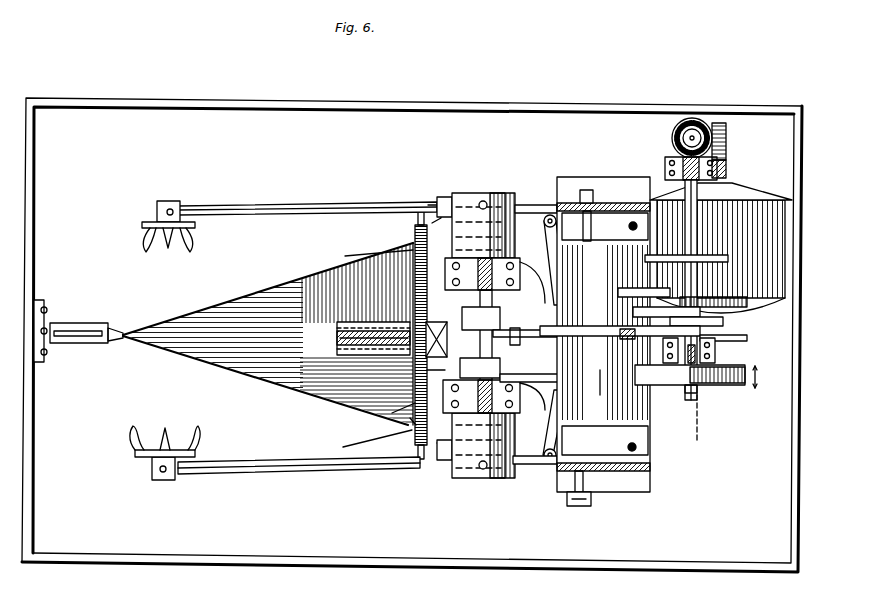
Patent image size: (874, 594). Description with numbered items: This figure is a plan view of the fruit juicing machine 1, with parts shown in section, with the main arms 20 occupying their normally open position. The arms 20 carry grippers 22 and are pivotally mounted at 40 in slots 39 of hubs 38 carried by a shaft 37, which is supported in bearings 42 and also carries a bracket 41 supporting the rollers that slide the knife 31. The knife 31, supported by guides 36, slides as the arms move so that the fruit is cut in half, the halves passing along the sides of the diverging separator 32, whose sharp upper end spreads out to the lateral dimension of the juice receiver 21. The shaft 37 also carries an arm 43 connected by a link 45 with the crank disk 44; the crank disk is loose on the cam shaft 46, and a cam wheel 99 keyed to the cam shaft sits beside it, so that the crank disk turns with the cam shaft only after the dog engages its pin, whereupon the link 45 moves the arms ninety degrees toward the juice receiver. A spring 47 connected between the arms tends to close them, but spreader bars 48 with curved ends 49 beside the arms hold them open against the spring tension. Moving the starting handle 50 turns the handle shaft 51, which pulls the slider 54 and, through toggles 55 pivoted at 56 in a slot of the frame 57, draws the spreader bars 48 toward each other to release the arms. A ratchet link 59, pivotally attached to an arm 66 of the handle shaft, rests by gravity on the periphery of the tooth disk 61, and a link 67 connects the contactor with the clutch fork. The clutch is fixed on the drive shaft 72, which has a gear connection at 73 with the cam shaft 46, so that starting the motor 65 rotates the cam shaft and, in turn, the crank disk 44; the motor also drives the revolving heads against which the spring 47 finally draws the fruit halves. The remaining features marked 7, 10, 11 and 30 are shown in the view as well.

The casing frame 1 is at (426, 107).
The gear thickness 7 is at (757, 375).
The axis line 10 is at (742, 339).
The main shaft 11 is at (755, 323).
The main arms 20 is at (273, 206).
The juice receiver 21 is at (414, 248).
The grippers 22 is at (148, 229).
The sleeve rod 30 is at (378, 347).
The knife 31 is at (117, 342).
The separator 32 is at (258, 296).
The guides 36 is at (56, 326).
The shaft 37 is at (500, 350).
The hubs 38 is at (505, 194).
The slots 39 is at (523, 334).
The pivot 40 is at (483, 203).
The bracket 41 is at (411, 321).
The bearings 42 is at (447, 268).
The arm 43 is at (440, 372).
The crank disk 44 is at (738, 386).
The link 45 is at (412, 419).
The cam shaft 46 is at (727, 178).
The spring 47 is at (392, 413).
The spreader bars 48 is at (533, 210).
The curved ends 49 is at (436, 215).
The starting handle 50 is at (569, 508).
The handle shaft 51 is at (590, 498).
The slider 54 is at (600, 372).
The toggles 55 is at (552, 240).
The pivot 56 is at (633, 222).
The frame 57 is at (640, 424).
The ratchet link 59 is at (660, 262).
The tooth disk 61 is at (707, 251).
The motor 65 is at (752, 193).
The arm 66 is at (712, 299).
The link 67 is at (727, 301).
The drive shaft 72 is at (698, 117).
The gear connection 73 is at (672, 140).
The cam wheel 99 is at (717, 350).